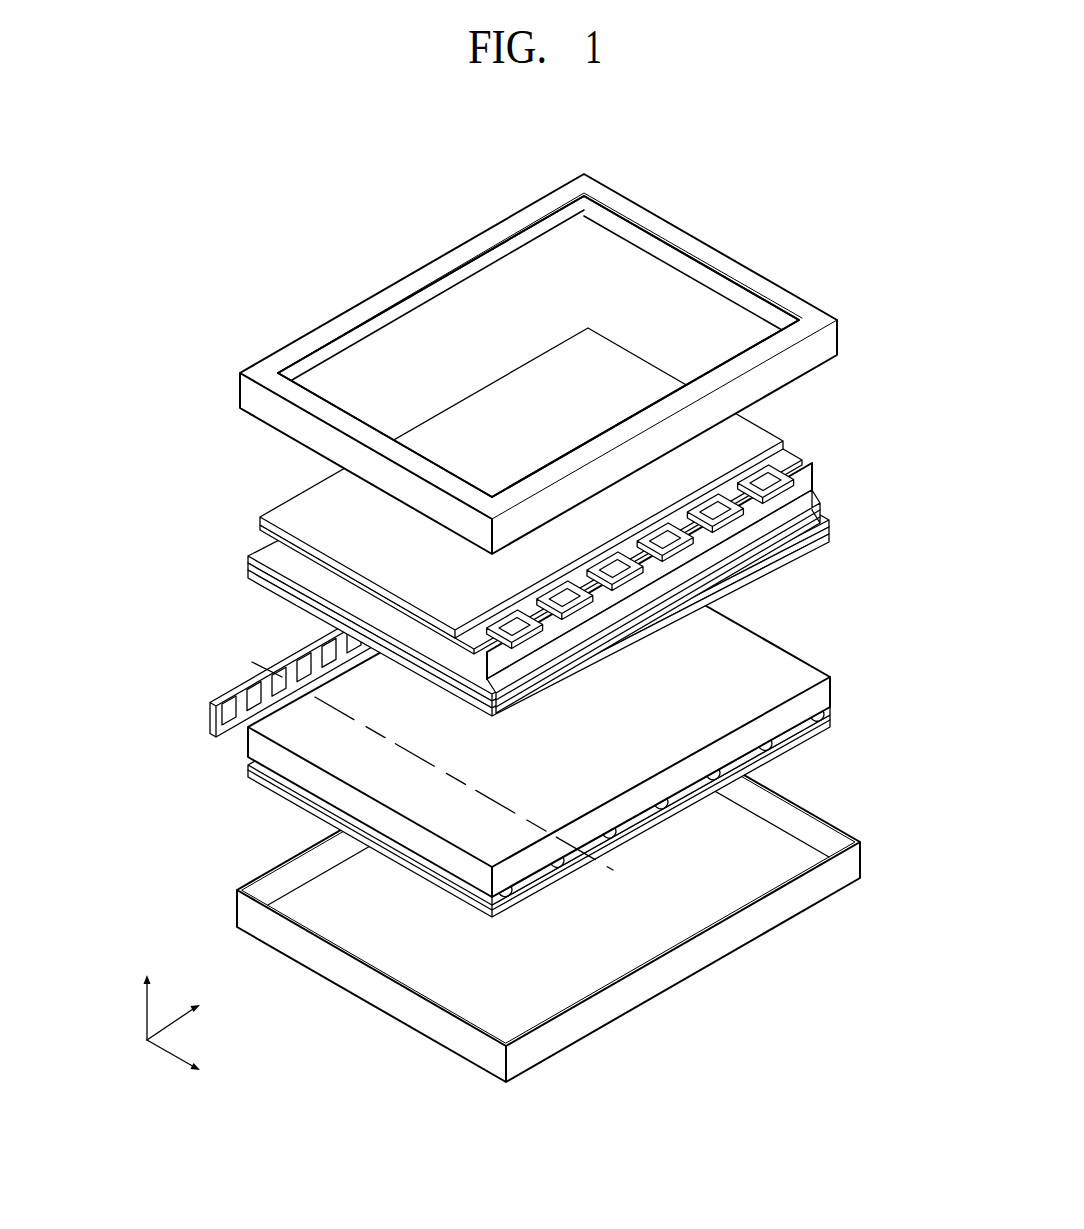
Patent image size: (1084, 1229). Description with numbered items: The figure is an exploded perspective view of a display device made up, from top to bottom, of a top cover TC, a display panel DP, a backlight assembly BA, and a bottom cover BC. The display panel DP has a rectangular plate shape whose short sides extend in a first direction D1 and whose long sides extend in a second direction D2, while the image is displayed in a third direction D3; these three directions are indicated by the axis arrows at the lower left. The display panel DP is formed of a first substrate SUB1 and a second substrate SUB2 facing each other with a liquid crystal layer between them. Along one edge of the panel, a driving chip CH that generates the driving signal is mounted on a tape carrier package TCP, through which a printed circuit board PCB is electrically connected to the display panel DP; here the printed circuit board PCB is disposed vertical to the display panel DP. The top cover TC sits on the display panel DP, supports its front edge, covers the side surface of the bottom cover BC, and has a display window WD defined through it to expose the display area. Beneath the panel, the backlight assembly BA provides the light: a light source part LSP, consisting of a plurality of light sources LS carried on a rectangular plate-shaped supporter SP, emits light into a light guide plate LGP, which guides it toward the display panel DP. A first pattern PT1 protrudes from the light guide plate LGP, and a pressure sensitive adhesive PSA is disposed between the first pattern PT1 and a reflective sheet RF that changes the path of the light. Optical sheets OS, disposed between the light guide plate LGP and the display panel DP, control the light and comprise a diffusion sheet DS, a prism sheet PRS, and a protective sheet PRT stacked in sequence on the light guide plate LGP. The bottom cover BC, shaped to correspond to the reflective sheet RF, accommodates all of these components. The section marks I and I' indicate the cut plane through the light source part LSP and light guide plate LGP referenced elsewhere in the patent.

The top cover TC is at (531, 364).
The display window WD is at (467, 303).
The display panel DP is at (567, 491).
The first substrate SUB1 is at (775, 462).
The second substrate SUB2 is at (730, 453).
The driving chip CH is at (814, 478).
The tape carrier package TCP is at (687, 588).
The printed circuit board PCB is at (752, 515).
The optical sheets OS is at (468, 549).
The protective sheet PRT is at (248, 559).
The prism sheet PRS is at (248, 567).
The diffusion sheet DS is at (248, 575).
The backlight assembly BA is at (507, 726).
The light source part LSP is at (331, 649).
The light sources LS is at (231, 716).
The supporter SP is at (212, 730).
The light guide plate LGP is at (247, 749).
The reflective sheet RF is at (254, 782).
The first pattern PT1 is at (819, 712).
The pressure sensitive adhesive PSA is at (831, 716).
The bottom cover BC is at (235, 905).
The section line I is at (416, 758).
The section line I' is at (592, 888).
The first direction D1 is at (187, 1062).
The second direction D2 is at (187, 1017).
The third direction D3 is at (146, 995).